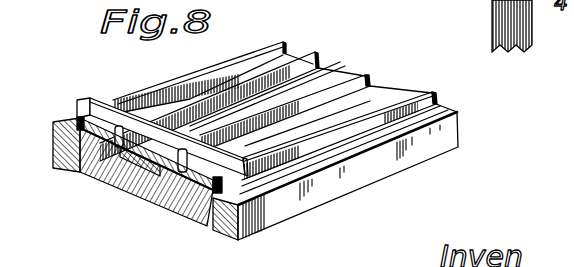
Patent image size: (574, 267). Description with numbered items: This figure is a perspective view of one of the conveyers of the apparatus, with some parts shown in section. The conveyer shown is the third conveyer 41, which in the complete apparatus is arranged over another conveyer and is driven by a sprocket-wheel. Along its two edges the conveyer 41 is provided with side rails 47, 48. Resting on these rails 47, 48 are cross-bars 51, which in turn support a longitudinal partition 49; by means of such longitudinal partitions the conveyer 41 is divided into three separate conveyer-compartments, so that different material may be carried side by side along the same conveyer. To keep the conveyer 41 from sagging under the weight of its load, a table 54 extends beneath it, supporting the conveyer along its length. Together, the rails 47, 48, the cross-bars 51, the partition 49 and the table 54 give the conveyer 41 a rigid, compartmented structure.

The third conveyer 41 is at (121, 178).
The side rail 47 is at (80, 121).
The side rail 48 is at (456, 88).
The longitudinal partition 49 is at (165, 112).
The cross-bar 51 is at (347, 85).
The table 54 is at (157, 190).